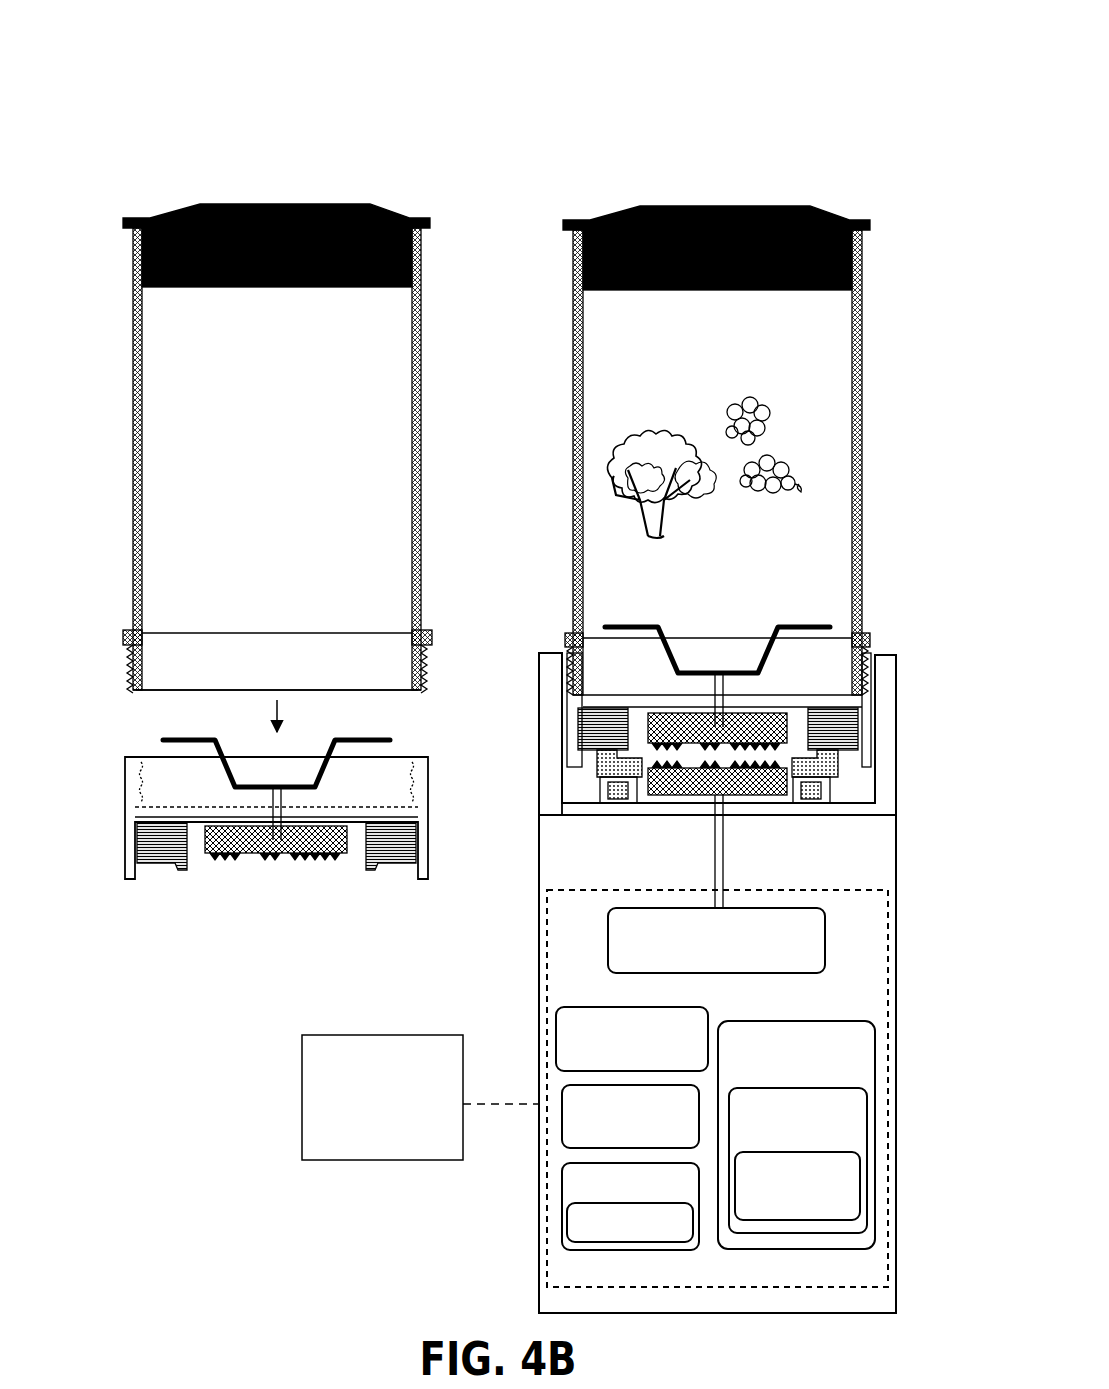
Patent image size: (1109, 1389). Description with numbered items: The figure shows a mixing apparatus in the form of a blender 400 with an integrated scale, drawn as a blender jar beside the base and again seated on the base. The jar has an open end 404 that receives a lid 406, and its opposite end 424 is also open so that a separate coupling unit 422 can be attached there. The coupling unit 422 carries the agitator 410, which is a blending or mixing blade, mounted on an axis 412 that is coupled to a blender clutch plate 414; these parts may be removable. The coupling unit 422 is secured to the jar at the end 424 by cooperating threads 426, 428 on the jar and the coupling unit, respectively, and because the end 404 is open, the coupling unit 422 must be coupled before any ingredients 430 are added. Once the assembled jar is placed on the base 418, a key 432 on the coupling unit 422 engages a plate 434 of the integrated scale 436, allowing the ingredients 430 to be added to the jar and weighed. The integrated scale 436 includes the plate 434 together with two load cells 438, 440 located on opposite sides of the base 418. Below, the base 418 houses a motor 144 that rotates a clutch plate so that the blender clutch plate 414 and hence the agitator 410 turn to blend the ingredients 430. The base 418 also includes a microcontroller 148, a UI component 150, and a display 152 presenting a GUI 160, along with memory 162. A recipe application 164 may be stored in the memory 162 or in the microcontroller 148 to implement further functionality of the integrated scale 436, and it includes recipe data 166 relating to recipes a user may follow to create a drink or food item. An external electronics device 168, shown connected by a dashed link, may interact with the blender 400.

The blender 400 is at (818, 32).
The open end 404 is at (229, 295).
The lid 406 is at (310, 196).
The agitator 410 is at (375, 734).
The axis 412 is at (287, 815).
The blender clutch plate 414 is at (238, 862).
The base 418 is at (706, 970).
The coupling unit 422 is at (236, 845).
The end 424 is at (160, 694).
The threads 426 is at (133, 779).
The threads 428 is at (128, 661).
The ingredients 430 is at (800, 440).
The key 432 is at (393, 868).
The plate 434 is at (838, 768).
The integrated scale 436 is at (590, 777).
The load cell 438 is at (622, 790).
The load cell 440 is at (826, 793).
The motor 144 is at (703, 966).
The microcontroller 148 is at (619, 1061).
The UI component 150 is at (617, 1138).
The display 152 is at (673, 1191).
The GUI 160 is at (659, 1231).
The memory 162 is at (783, 1074).
The recipe application 164 is at (855, 1142).
The recipe data 166 is at (797, 1186).
The electronics device 168 is at (364, 1138).